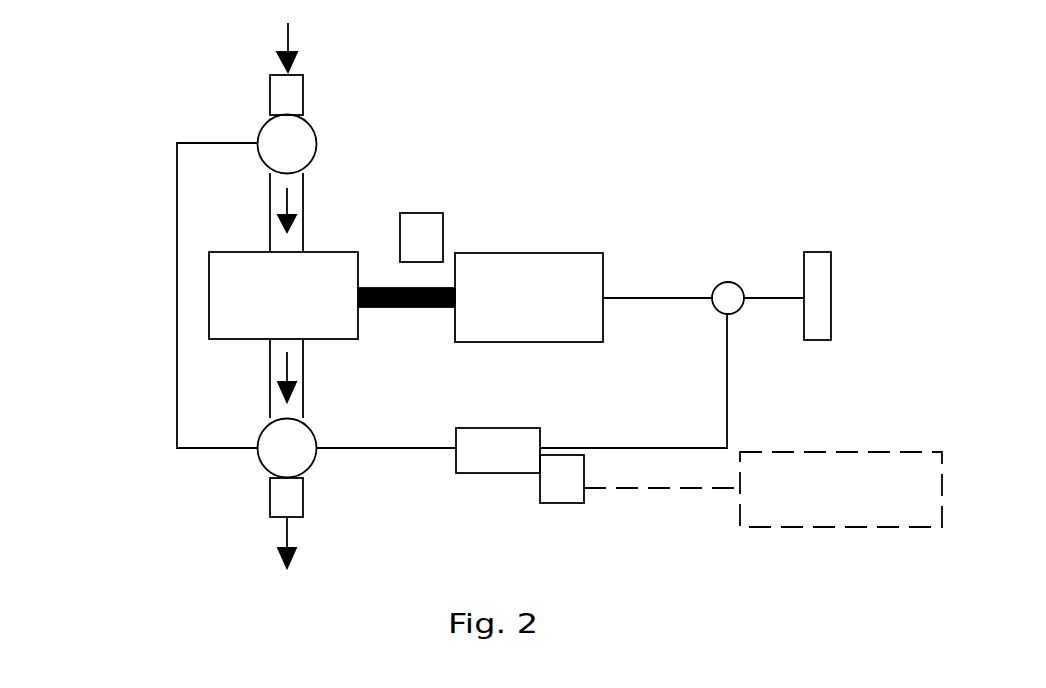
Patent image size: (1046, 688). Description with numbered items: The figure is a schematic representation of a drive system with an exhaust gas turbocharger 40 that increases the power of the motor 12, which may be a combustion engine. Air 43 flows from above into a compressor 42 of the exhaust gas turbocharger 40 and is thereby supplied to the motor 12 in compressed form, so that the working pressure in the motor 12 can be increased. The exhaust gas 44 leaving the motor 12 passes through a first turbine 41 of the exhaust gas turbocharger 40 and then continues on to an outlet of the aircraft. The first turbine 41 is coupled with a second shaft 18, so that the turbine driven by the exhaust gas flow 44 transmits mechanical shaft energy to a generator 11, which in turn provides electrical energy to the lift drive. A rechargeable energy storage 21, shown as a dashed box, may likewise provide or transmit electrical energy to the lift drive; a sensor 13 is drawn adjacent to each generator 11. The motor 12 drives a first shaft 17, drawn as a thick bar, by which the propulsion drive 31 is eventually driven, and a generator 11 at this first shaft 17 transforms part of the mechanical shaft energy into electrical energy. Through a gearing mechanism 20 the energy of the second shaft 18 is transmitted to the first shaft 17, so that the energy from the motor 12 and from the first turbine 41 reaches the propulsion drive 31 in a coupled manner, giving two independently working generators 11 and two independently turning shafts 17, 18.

The generator 11 is at (550, 267).
The motor 12 is at (327, 263).
The sensor 13 is at (437, 222).
The first shaft 17 is at (408, 308).
The second shaft 18 is at (360, 448).
The gearing mechanism 20 is at (725, 293).
The rechargeable energy storage 21 is at (867, 460).
The propulsion drive 31 is at (853, 290).
The exhaust gas turbocharger 40 is at (150, 260).
The first turbine 41 is at (305, 458).
The compressor 42 is at (303, 133).
The air 43 is at (290, 43).
The exhaust gas 44 is at (278, 370).